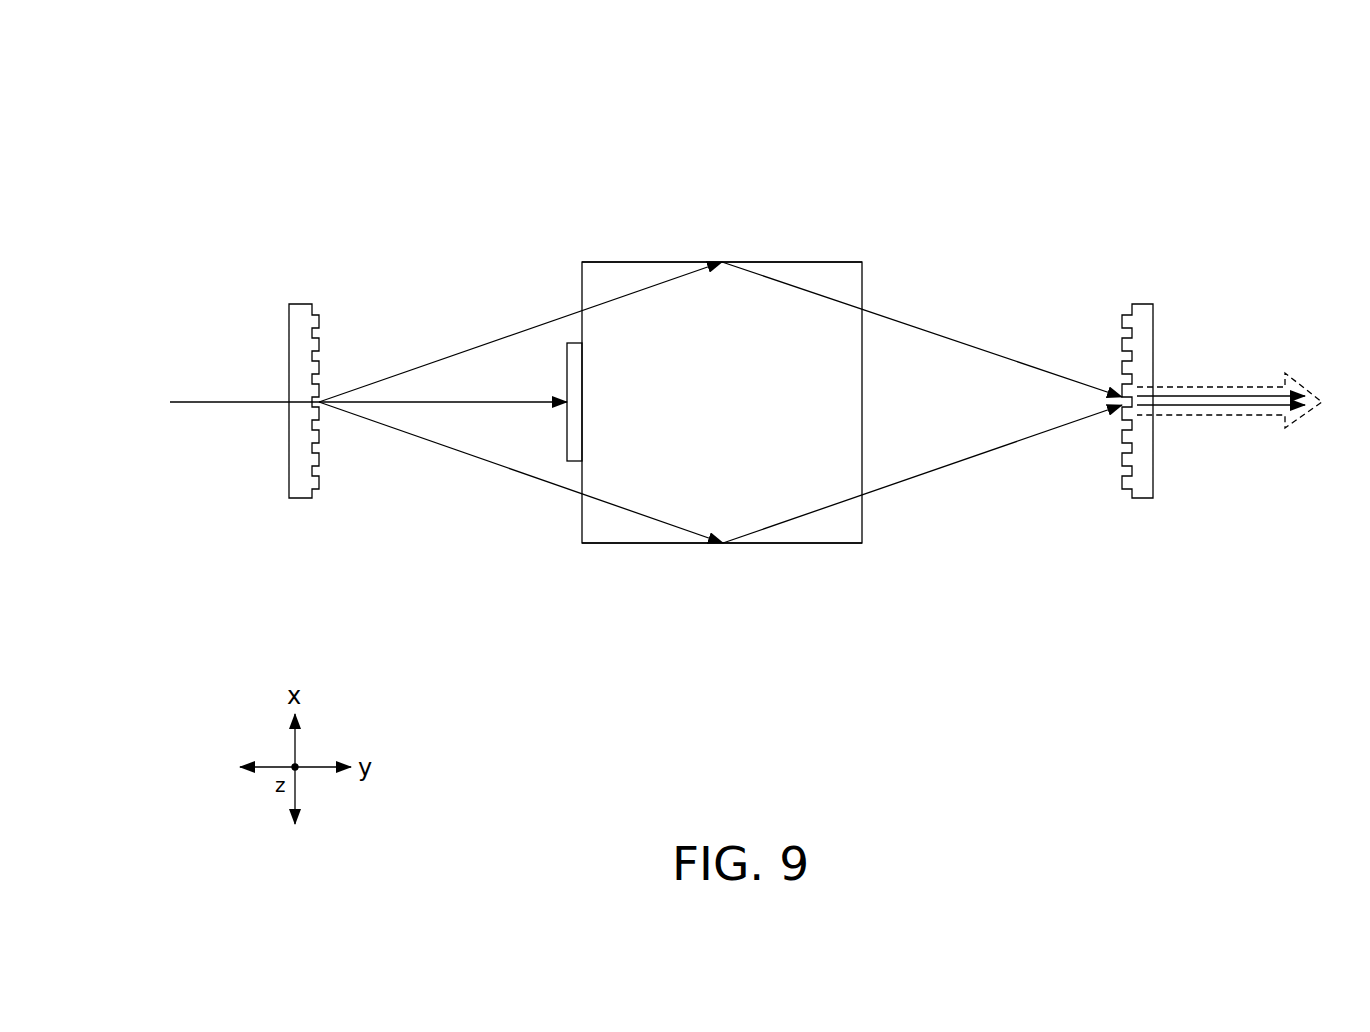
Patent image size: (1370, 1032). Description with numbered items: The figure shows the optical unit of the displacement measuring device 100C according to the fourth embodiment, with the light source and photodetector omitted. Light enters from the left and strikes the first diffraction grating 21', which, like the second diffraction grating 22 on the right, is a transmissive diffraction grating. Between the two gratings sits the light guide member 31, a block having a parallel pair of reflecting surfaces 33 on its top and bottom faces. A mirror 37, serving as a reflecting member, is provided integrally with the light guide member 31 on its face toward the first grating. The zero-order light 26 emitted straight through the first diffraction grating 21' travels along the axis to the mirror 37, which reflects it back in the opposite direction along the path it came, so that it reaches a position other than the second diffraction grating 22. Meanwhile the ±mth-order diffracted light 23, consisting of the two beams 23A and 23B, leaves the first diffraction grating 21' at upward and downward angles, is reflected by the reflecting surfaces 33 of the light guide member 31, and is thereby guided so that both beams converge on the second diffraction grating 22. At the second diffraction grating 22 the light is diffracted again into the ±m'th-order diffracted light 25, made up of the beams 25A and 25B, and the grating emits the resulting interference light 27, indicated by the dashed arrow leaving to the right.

The displacement measuring device 100C is at (724, 143).
The first diffraction grating 21' is at (301, 355).
The second diffraction grating 22 is at (1140, 304).
The ±mth-order diffracted light 23 is at (496, 533).
The ±mth-order diffracted light 23A is at (370, 426).
The ±mth-order diffracted light 23B is at (443, 356).
The ±m'th-order diffracted light 25 is at (1328, 533).
The ±m'th-order diffracted light 25A is at (1258, 407).
The ±m'th-order diffracted light 25B is at (1197, 398).
The zero-order light 26 is at (527, 398).
The interference light 27 is at (1234, 386).
The light guide member 31 is at (838, 262).
The reflecting surface 33 is at (638, 262).
The mirror 37 is at (567, 428).